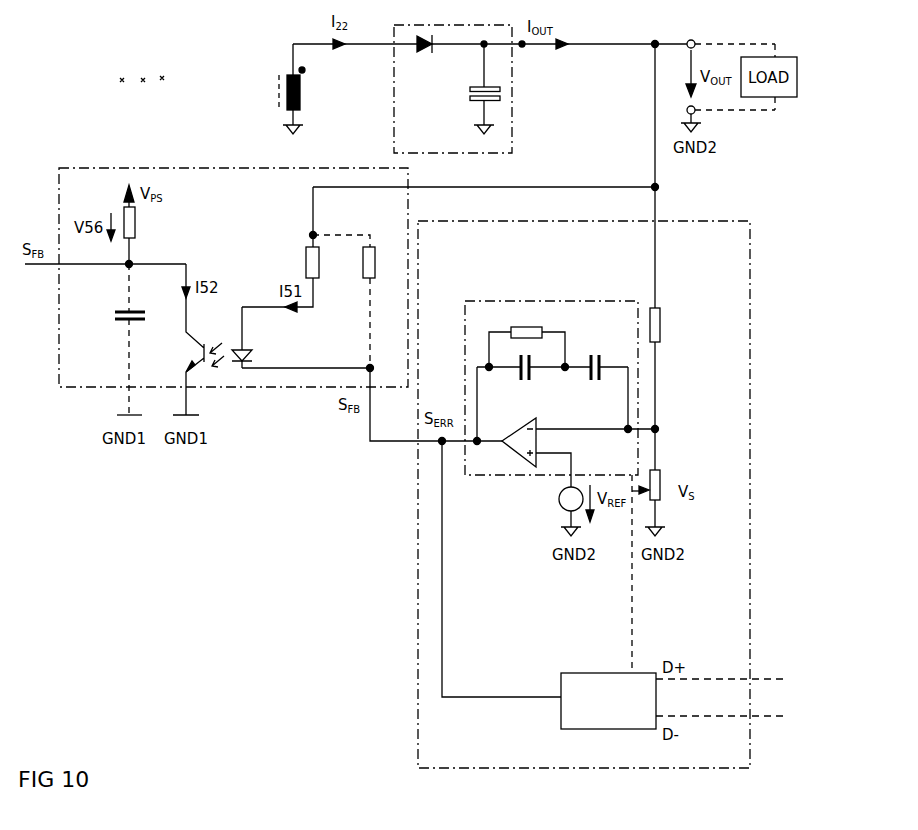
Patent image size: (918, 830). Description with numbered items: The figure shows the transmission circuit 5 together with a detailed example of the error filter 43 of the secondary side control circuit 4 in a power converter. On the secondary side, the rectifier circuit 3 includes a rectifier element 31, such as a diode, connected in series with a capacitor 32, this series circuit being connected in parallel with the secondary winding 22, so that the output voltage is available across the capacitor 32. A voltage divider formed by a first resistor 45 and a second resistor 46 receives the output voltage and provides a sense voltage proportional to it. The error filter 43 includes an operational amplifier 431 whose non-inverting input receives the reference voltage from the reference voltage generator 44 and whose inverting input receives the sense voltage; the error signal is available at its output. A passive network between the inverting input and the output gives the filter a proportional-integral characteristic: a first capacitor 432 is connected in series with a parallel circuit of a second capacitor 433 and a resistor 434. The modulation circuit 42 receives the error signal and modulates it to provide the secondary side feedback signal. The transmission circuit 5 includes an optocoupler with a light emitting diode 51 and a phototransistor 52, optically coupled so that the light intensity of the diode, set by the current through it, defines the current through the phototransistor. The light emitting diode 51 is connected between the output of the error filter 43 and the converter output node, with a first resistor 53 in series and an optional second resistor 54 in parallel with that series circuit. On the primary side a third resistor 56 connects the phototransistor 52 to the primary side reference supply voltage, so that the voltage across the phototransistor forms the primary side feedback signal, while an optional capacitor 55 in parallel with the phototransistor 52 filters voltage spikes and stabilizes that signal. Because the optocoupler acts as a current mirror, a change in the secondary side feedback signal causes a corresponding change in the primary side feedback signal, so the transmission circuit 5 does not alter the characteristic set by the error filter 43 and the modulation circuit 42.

The secondary winding 22 is at (300, 107).
The secondary side rectifier circuit 3 is at (463, 25).
The rectifier element 31 is at (421, 58).
The capacitor 32 is at (470, 89).
The secondary side control circuit 4 is at (704, 219).
The modulation circuit 42 is at (642, 668).
The error filter 43 is at (606, 301).
The operational amplifier 431 is at (526, 421).
The first capacitor 432 is at (591, 379).
The second capacitor 433 is at (520, 379).
The resistor 434 is at (527, 335).
The reference voltage generator 44 is at (557, 505).
The first resistor 45 is at (677, 325).
The second resistor 46 is at (668, 479).
The transmission circuit 5 is at (140, 166).
The light emitting diode 51 is at (246, 348).
The phototransistor 52 is at (196, 334).
The first resistor 53 is at (326, 263).
The second resistor 54 is at (383, 307).
The capacitor 55 is at (108, 314).
The third resistor 56 is at (135, 228).